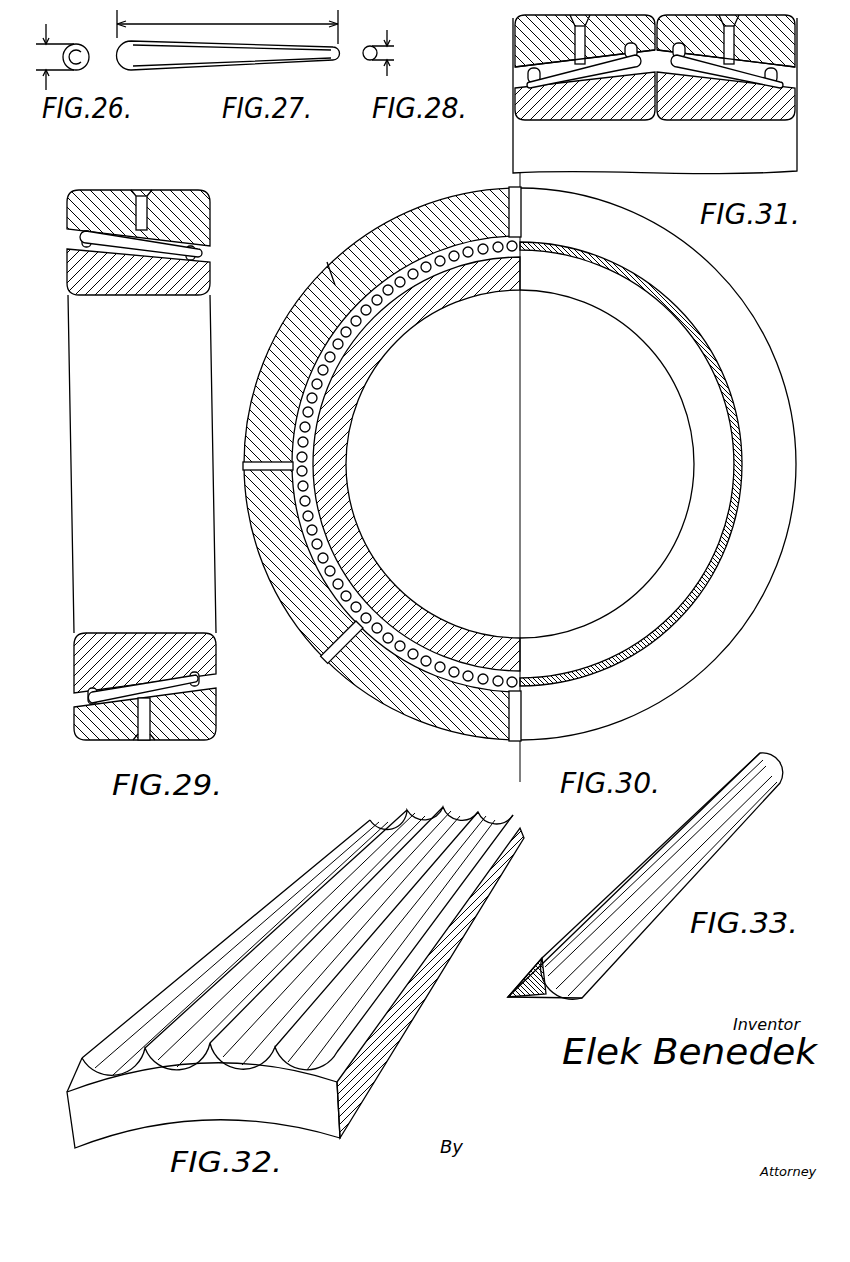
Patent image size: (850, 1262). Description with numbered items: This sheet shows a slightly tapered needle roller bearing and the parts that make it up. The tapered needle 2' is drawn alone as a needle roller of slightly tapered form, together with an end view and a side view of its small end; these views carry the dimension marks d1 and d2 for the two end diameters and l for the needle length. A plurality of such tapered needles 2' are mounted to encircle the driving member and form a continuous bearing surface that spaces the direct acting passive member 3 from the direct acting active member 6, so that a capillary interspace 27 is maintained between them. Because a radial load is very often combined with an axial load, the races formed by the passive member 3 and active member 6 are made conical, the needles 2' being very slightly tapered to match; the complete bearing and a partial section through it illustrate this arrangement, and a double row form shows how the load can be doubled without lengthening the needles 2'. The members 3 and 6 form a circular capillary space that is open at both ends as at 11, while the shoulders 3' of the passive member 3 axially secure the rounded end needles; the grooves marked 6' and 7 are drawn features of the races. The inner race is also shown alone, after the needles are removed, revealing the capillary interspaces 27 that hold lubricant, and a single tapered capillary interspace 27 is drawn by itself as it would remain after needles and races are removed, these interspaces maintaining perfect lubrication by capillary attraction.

In FIG. 26, the tapered needle 2' is at (84, 41).
In FIG. 27, the tapered needle 2' is at (228, 72).
In FIG. 28, the tapered needle 2' is at (364, 68).
In FIG. 31, the tapered needle 2' is at (655, 105).
In FIG. 29, the tapered needle 2' is at (141, 433).
In FIG. 30, the tapered needle 2' is at (519, 464).
In FIG. 31, the passive member 3 is at (655, 41).
In FIG. 29, the passive member 3 is at (128, 465).
In FIG. 30, the passive member 3 is at (520, 457).
In FIG. 31, the shoulders of passive member 3' is at (655, 67).
In FIG. 31, the active member 6 is at (644, 116).
In FIG. 29, the active member 6 is at (127, 471).
In FIG. 30, the active member 6 is at (503, 464).
In FIG. 32, the active member 6 is at (295, 981).
In FIG. 29, the raceway of inner ring 6' is at (138, 473).
In FIG. 31, the slot 7 is at (654, 39).
In FIG. 29, the slot 7 is at (141, 199).
In FIG. 30, the slot 7 is at (523, 217).
In FIG. 31, the open end of capillary space 11 is at (795, 83).
In FIG. 29, the open end of capillary space 11 is at (72, 233).
In FIG. 32, the capillary interspace 27 is at (152, 1065).
In FIG. 33, the capillary interspace 27 is at (600, 965).
In FIG. 28, the small roller diameter d1 is at (395, 53).
In FIG. 26, the large roller diameter d2 is at (52, 57).
In FIG. 27, the roller length l is at (227, 27).